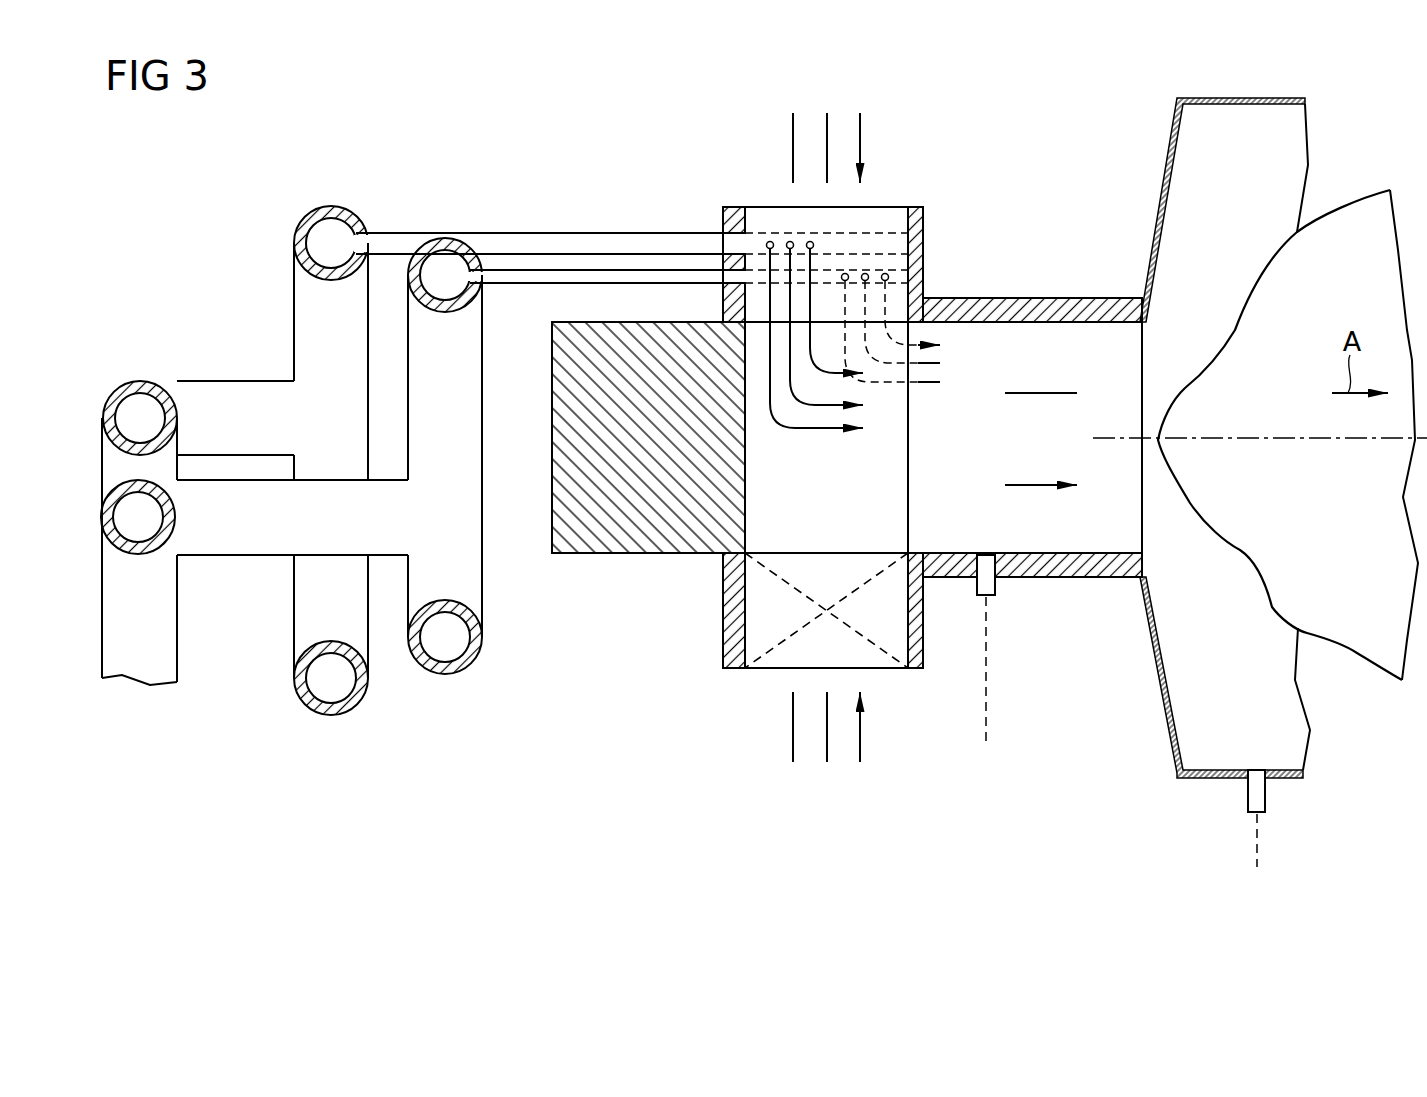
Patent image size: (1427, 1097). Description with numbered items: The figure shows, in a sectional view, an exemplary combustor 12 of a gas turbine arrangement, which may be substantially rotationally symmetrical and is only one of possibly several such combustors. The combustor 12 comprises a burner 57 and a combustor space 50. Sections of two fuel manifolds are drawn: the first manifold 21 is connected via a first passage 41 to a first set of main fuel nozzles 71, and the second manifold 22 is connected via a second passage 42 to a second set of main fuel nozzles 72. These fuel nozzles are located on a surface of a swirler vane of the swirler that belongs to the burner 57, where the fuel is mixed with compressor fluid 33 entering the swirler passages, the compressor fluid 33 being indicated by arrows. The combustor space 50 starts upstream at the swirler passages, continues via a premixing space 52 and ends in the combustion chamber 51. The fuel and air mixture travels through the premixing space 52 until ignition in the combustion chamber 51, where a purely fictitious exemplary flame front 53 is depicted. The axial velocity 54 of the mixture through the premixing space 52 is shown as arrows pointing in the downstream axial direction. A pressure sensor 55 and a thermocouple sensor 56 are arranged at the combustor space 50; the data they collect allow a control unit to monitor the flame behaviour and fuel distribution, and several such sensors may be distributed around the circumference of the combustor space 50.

The combustor 12 is at (657, 132).
The first manifold 21 is at (143, 555).
The second manifold 22 is at (140, 380).
The compressor fluid 33 is at (793, 740).
The first passage 41 is at (530, 284).
The second passage 42 is at (613, 233).
The combustor space 50 is at (777, 533).
The combustion chamber 51 is at (1190, 655).
The premixing space 52 is at (1022, 270).
The flame front 53 is at (1262, 262).
The axial velocity 54 is at (1035, 485).
The pressure sensor 55 is at (1268, 800).
The thermocouple sensor 56 is at (998, 588).
The burner 57 is at (640, 582).
The first set of main fuel nozzles 71 is at (905, 262).
The second set of main fuel nozzles 72 is at (777, 228).